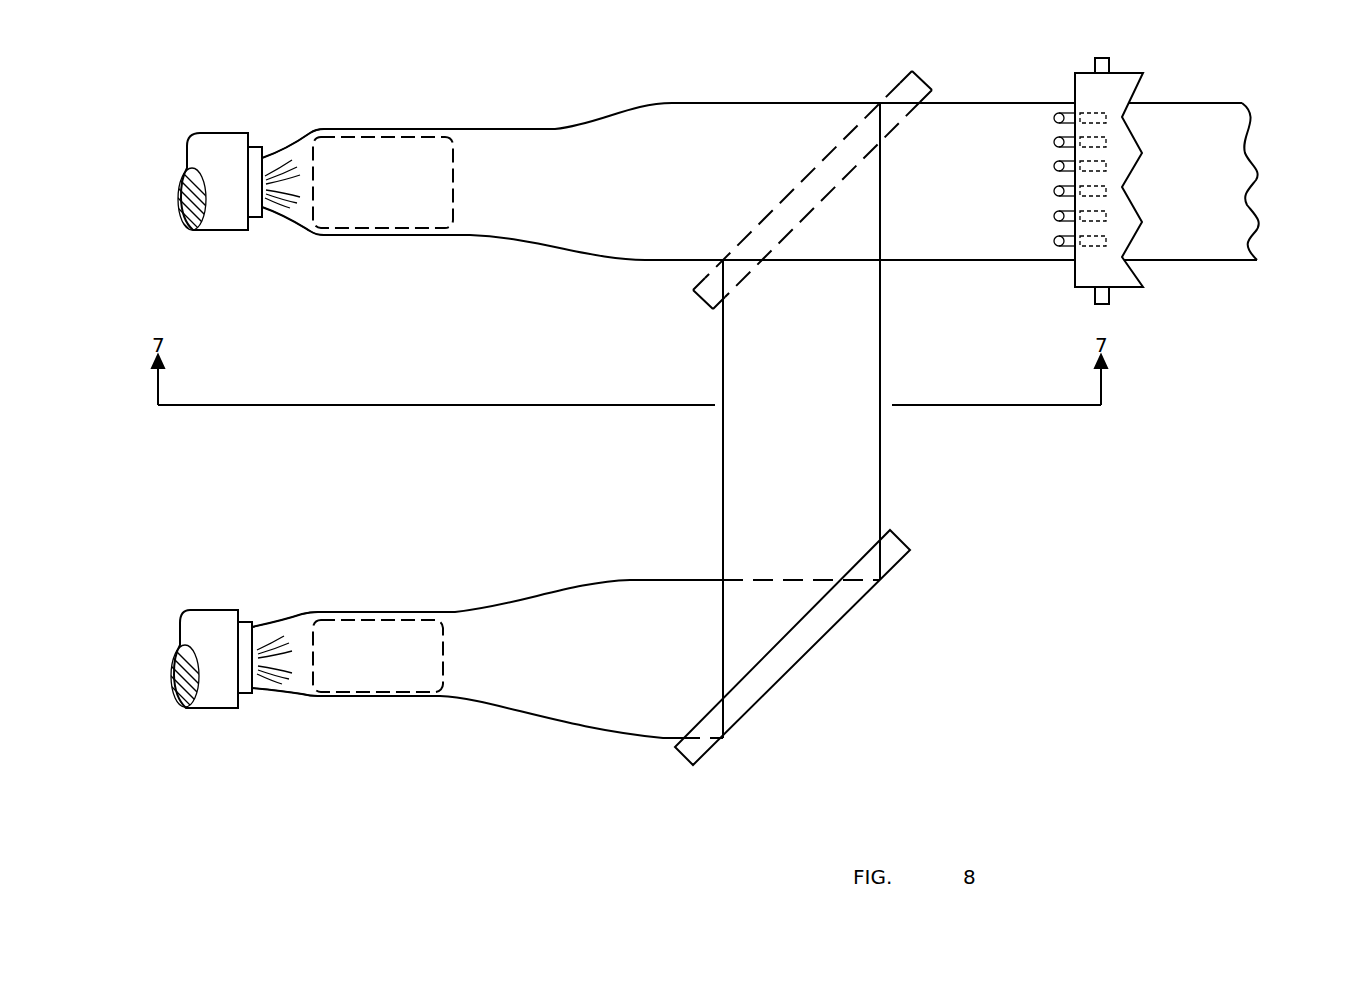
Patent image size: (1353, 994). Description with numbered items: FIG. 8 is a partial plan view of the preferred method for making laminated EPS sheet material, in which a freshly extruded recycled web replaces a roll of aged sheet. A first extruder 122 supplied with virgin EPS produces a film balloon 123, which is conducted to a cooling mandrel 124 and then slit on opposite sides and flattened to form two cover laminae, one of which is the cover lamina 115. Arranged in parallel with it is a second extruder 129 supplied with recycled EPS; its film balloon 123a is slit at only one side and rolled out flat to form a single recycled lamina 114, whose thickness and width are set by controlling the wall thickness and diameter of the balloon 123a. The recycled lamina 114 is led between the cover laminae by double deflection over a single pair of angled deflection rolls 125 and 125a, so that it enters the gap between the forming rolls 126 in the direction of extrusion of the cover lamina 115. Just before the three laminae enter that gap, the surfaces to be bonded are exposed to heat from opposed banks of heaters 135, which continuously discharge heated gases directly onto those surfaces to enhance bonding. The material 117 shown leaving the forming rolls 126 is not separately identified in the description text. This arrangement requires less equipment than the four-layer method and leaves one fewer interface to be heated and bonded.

The recycled lamina 114 is at (816, 437).
The cover lamina 115 is at (693, 185).
The light guide to patient 117 is at (1222, 200).
The first extruder 122 is at (213, 142).
The film balloon 123 is at (467, 237).
The film balloon 123a is at (442, 695).
The cooling mandrel 124 is at (375, 216).
The angled deflection roll 125 is at (908, 82).
The angled deflection roll 125a is at (893, 553).
The forming rolls 126 is at (1117, 93).
The second extruder 129 is at (223, 620).
The bank of heaters 135 is at (1062, 113).